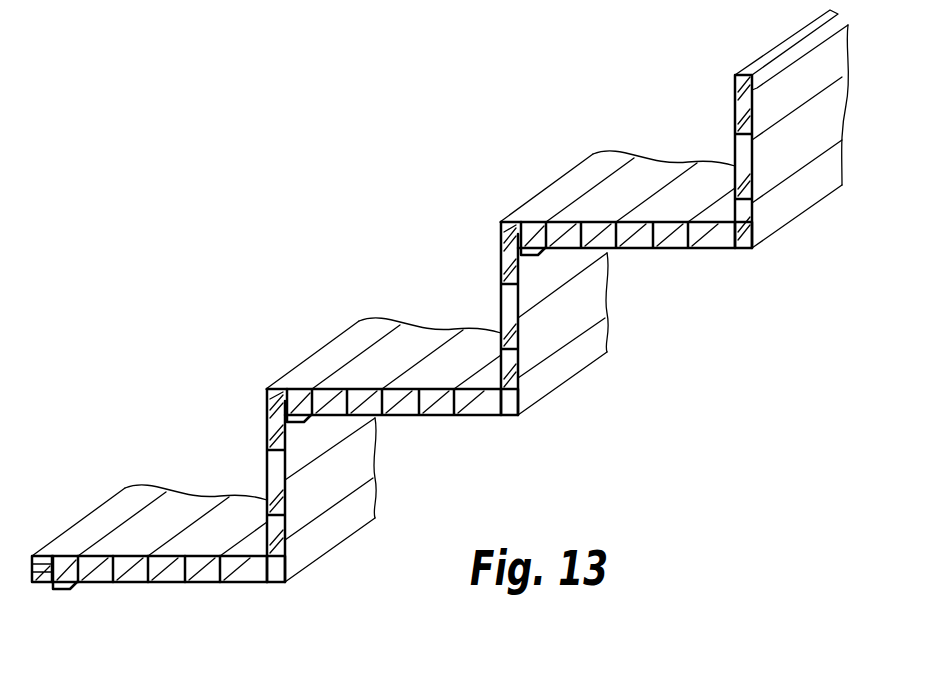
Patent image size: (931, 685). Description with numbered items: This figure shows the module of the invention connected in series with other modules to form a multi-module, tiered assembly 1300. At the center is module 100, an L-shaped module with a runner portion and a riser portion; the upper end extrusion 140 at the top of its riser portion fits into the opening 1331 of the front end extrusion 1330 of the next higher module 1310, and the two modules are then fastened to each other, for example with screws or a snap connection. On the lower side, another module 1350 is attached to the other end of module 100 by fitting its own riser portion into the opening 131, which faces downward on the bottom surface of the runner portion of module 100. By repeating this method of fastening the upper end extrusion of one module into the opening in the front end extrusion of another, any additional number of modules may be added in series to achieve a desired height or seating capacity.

The module 100 is at (422, 447).
The opening 131 is at (264, 414).
The upper end extrusion 140 is at (500, 298).
The multi-module tiered assembly 1300 is at (686, 448).
The module 1310 is at (686, 276).
The front end extrusion 1330 is at (500, 222).
The opening 1331 is at (497, 248).
The module 1350 is at (133, 600).